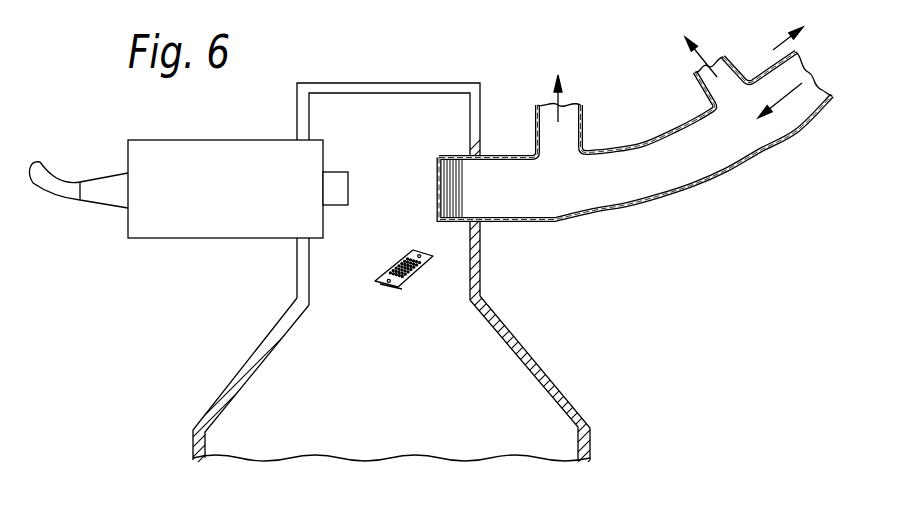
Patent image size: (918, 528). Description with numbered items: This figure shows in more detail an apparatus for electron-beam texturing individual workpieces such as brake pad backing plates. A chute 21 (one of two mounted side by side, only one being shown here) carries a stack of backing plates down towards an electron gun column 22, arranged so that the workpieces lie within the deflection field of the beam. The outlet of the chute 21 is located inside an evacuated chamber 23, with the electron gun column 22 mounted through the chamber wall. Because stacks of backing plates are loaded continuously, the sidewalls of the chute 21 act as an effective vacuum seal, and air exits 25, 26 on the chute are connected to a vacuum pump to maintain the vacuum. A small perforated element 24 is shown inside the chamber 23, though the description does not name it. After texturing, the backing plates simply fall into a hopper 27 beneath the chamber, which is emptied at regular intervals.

The chute 21 is at (545, 204).
The electron gun column 22 is at (240, 224).
The evacuated chamber 23 is at (432, 88).
The filter plate 24 is at (400, 287).
The air exit 25 is at (585, 123).
The air exit 26 is at (700, 91).
The hopper 27 is at (522, 405).